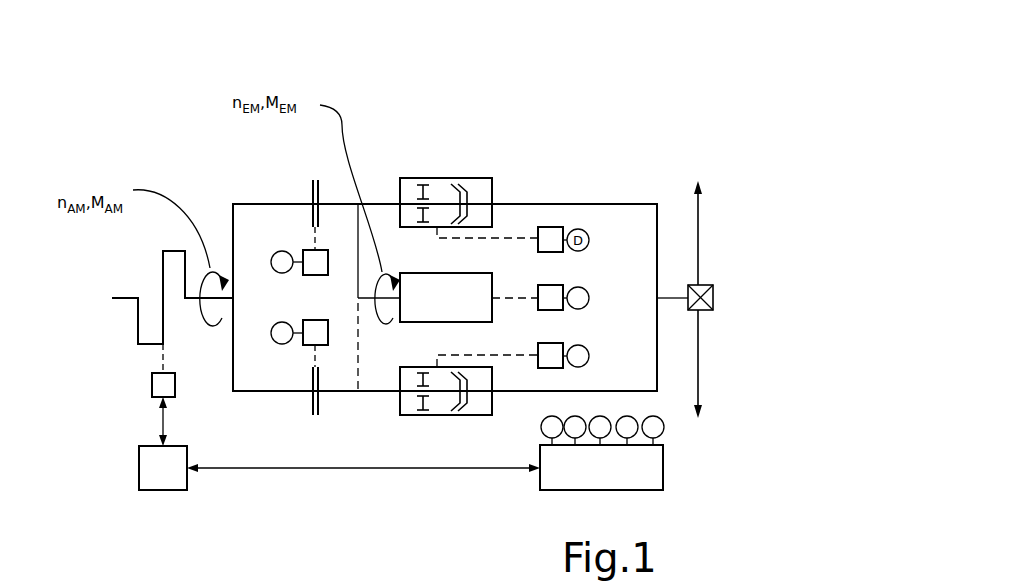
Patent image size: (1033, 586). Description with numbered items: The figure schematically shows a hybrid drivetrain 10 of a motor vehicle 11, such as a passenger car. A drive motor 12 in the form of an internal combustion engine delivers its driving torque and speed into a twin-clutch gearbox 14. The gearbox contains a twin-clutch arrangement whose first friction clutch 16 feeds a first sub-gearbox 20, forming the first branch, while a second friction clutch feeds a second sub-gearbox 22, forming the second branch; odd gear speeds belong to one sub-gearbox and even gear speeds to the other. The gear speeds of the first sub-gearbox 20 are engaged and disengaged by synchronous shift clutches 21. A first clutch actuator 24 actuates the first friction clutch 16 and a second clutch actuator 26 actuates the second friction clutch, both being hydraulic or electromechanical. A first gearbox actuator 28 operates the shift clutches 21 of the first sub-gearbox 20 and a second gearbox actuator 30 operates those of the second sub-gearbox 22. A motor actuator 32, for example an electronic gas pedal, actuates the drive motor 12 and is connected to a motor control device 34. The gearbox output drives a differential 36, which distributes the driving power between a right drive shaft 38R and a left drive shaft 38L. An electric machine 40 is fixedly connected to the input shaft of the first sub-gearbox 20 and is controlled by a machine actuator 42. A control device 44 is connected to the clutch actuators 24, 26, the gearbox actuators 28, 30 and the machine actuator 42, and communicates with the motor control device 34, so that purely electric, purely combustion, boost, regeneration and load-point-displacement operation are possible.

The drivetrain 10 is at (640, 110).
The vehicle 11 is at (757, 104).
The drive motor 12 is at (117, 297).
The twin-clutch gearbox 14 is at (473, 106).
The first friction clutch 16 is at (312, 193).
The first sub-gearbox 20 is at (445, 178).
The shift clutches 21 is at (467, 190).
The second sub-gearbox 22 is at (484, 415).
The first clutch actuator 24 is at (303, 249).
The second clutch actuator 26 is at (306, 346).
The first gearbox actuator 28 is at (320, 402).
The second gearbox actuator 30 is at (560, 370).
The motor actuator 32 is at (152, 388).
The motor control device 34 is at (139, 463).
The differential 36 is at (713, 298).
The right drive shaft 38R is at (700, 225).
The left drive shaft 38L is at (700, 380).
The electric machine 40 is at (400, 273).
The machine actuator 42 is at (560, 312).
The control device 44 is at (663, 470).